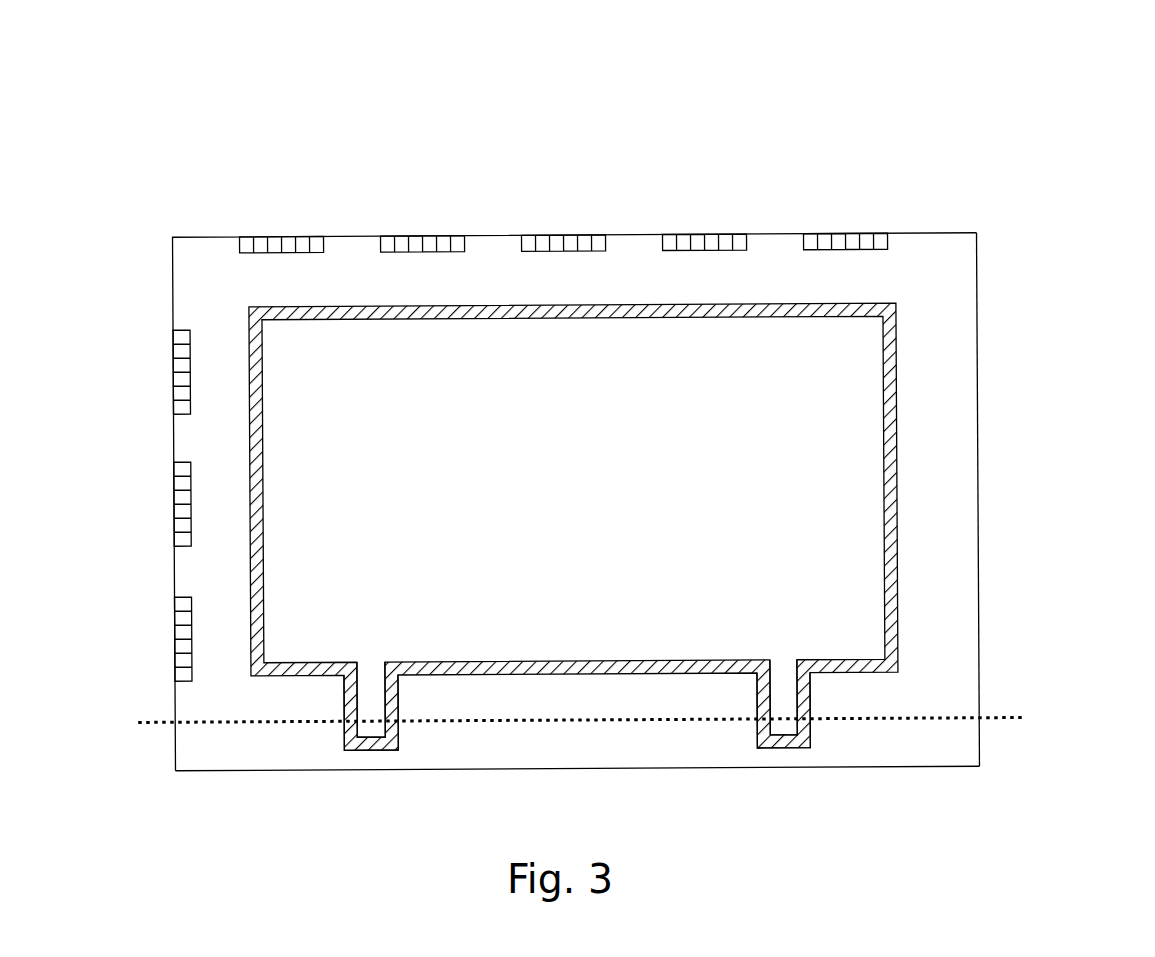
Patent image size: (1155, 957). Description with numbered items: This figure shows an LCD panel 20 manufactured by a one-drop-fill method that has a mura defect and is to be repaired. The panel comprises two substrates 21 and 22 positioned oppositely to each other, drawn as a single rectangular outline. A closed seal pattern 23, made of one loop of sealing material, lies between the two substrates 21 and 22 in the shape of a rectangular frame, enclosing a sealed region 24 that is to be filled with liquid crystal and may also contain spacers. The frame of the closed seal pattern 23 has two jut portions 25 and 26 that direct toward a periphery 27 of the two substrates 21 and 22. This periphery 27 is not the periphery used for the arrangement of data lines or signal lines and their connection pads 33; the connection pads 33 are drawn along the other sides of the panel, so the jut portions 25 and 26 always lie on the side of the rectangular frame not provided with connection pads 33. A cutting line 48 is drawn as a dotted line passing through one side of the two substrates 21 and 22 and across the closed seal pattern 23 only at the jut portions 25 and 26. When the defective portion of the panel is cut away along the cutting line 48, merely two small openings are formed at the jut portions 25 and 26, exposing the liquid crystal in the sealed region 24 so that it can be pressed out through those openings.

The substrate assembly 20 is at (626, 438).
The substrate 21 is at (978, 566).
The substrate 22 is at (962, 646).
The closed seal pattern 23 is at (897, 420).
The sealed region 24 is at (305, 586).
The jut portion 25 is at (379, 756).
The jut portion 26 is at (815, 752).
The periphery 27 is at (619, 772).
The connection pads 33 is at (289, 246).
The cutting line 48 is at (259, 722).